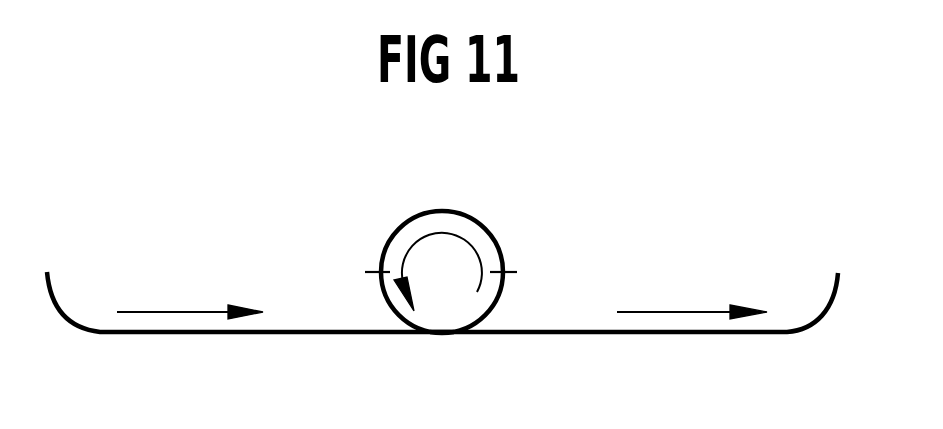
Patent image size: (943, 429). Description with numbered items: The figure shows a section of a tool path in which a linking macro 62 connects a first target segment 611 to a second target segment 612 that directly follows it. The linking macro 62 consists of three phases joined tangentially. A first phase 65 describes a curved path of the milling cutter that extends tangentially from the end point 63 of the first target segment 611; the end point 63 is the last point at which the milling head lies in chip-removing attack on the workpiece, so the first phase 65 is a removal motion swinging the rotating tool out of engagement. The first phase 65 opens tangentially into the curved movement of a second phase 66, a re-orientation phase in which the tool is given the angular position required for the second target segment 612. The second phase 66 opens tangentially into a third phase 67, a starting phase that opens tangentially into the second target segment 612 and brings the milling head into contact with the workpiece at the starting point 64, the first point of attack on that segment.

The linking macro 62 is at (478, 205).
The second phase 66 is at (416, 218).
The third phase 67 is at (381, 302).
The first phase 65 is at (500, 301).
The end point 63 is at (433, 378).
The starting point 64 is at (442, 335).
The first target segment 611 is at (220, 335).
The second target segment 612 is at (673, 335).